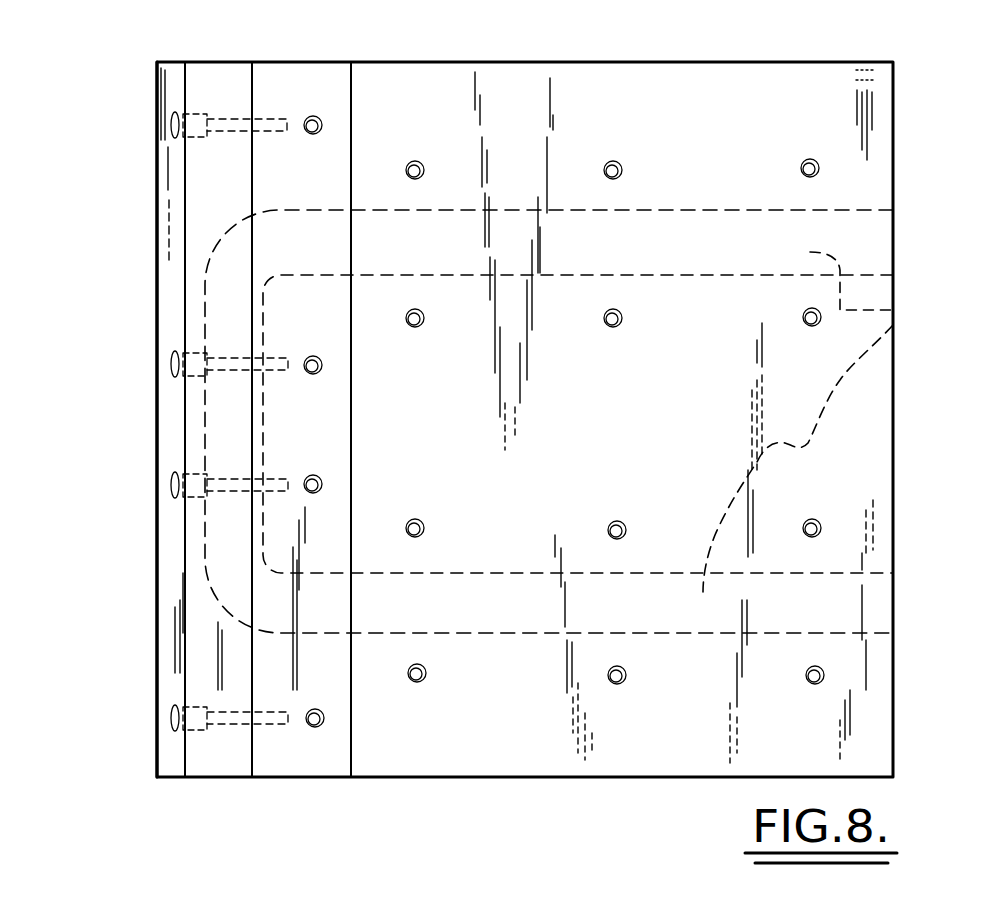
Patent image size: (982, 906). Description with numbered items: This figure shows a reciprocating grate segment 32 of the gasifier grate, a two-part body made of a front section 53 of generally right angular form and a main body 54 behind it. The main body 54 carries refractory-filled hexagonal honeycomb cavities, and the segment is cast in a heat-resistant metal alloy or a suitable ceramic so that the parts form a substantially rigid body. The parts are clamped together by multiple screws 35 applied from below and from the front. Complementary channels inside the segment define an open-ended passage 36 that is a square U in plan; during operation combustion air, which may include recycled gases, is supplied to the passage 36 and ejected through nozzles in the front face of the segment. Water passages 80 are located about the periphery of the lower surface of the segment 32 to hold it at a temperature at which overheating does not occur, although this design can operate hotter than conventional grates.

The reciprocating grate segment 32 is at (156, 134).
The screws 35 is at (315, 118).
The open-ended passage 36 is at (893, 314).
The front section 53 is at (172, 447).
The main body 54 is at (880, 118).
The water passages 80 is at (207, 305).